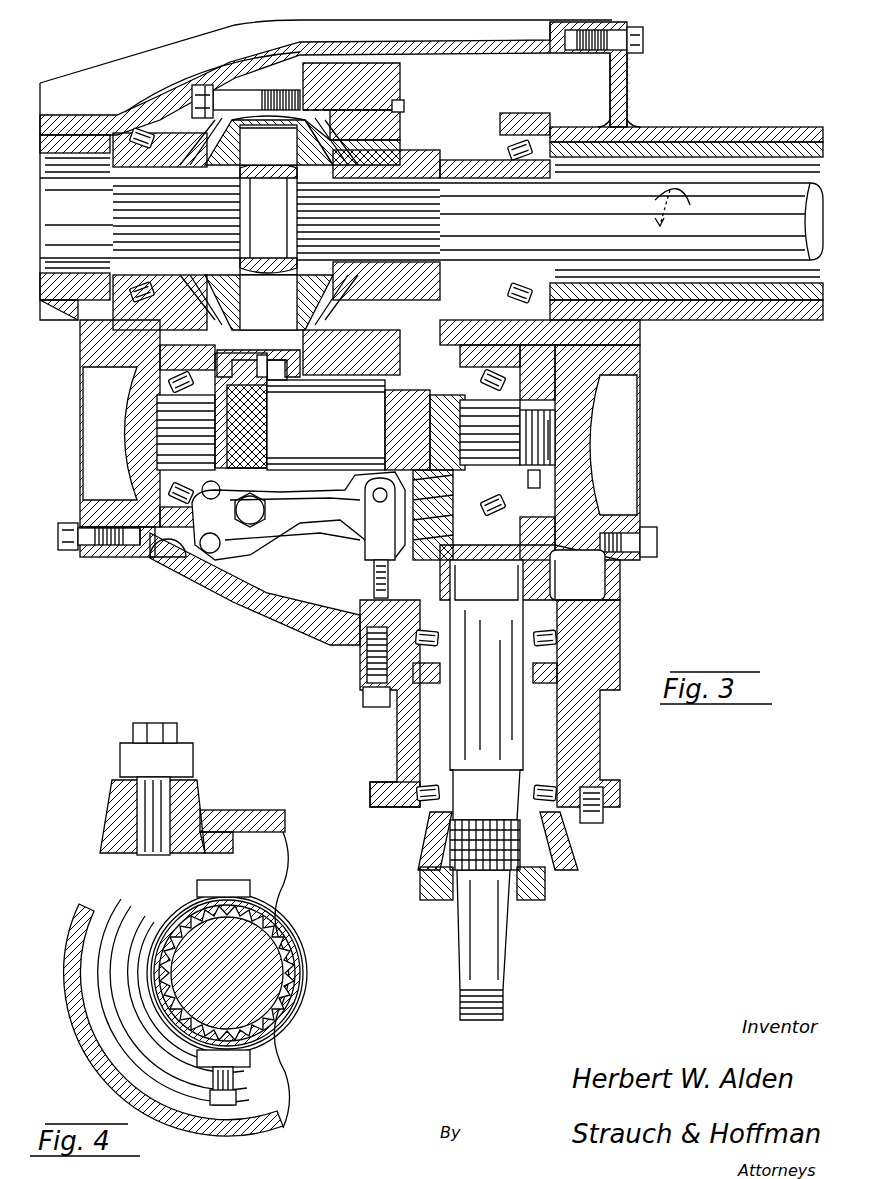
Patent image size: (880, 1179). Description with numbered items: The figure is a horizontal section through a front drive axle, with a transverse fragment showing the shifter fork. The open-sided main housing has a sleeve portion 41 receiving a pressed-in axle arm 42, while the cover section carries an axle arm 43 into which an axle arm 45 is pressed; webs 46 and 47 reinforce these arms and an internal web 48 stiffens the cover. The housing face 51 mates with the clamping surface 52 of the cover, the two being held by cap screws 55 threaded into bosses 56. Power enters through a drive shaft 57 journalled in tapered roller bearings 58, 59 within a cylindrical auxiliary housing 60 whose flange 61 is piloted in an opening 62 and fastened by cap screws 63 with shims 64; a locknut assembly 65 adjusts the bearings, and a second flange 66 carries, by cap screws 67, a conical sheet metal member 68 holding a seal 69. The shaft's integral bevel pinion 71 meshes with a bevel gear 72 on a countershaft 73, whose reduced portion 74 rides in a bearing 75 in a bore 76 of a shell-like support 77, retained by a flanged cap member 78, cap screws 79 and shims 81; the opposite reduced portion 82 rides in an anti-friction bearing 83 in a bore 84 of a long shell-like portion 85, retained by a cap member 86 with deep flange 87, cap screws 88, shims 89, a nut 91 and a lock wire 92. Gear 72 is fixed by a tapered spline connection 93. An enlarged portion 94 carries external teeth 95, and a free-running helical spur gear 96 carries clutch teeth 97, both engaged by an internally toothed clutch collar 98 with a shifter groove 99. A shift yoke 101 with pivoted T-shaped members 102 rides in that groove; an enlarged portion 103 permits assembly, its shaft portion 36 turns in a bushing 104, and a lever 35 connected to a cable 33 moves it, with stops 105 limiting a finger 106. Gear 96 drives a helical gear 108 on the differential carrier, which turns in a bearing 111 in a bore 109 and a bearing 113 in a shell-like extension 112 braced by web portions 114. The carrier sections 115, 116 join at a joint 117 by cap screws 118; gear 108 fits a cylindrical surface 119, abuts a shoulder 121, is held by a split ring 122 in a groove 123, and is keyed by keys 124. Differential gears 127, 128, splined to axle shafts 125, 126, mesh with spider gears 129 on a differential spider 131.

In FIG. 3, the cable 33 is at (372, 589).
In FIG. 3, the lever 35 is at (355, 482).
In FIG. 4, the lever 35 is at (125, 750).
In FIG. 3, the shaft portion 36 is at (266, 512).
In FIG. 4, the shaft portion 36 is at (140, 797).
In FIG. 3, the sleeve portion 41 is at (60, 320).
In FIG. 3, the axle arm 42 is at (88, 265).
In FIG. 3, the axle arm 43 is at (775, 127).
In FIG. 3, the axle arm 45 is at (780, 322).
In FIG. 3, the strengthening web 46 is at (93, 80).
In FIG. 3, the strengthening web 47 is at (640, 108).
In FIG. 3, the internal web 48 is at (600, 62).
In FIG. 3, the face 51 is at (607, 62).
In FIG. 3, the clamping surface 52 is at (628, 60).
In FIG. 3, the cap screw 55 is at (645, 40).
In FIG. 3, the boss 56 is at (565, 29).
In FIG. 3, the drive shaft 57 is at (502, 712).
In FIG. 3, the tapered roller bearing 58 is at (530, 799).
In FIG. 3, the tapered roller bearing 59 is at (530, 650).
In FIG. 3, the pinion bearing housing 60 is at (570, 740).
In FIG. 3, the flange 61 is at (580, 600).
In FIG. 3, the opening 62 is at (605, 662).
In FIG. 3, the cap screw 63 is at (360, 700).
In FIG. 3, the shim 64 is at (365, 668).
In FIG. 3, the locknut assembly 65 is at (440, 845).
In FIG. 3, the second flange 66 is at (370, 795).
In FIG. 3, the cap screw 67 is at (595, 823).
In FIG. 3, the conical sheet metal member 68 is at (555, 858).
In FIG. 3, the seal 69 is at (437, 904).
In FIG. 3, the bevel pinion 71 is at (486, 603).
In FIG. 3, the bevel gear 72 is at (420, 488).
In FIG. 3, the countershaft 73 is at (418, 449).
In FIG. 4, the countershaft 73 is at (290, 1000).
In FIG. 3, the reduced portion 74 is at (190, 449).
In FIG. 3, the bearing 75 is at (190, 427).
In FIG. 3, the bore 76 is at (167, 343).
In FIG. 3, the shell-like support 77 is at (183, 370).
In FIG. 3, the flanged cap member 78 is at (112, 439).
In FIG. 3, the cap screw 79 is at (65, 548).
In FIG. 3, the shim 81 is at (90, 555).
In FIG. 3, the reduced portion 82 is at (502, 457).
In FIG. 3, the anti-friction bearing 83 is at (500, 424).
In FIG. 3, the bore 84 is at (495, 367).
In FIG. 3, the shell-like portion 85 is at (480, 367).
In FIG. 3, the cap member 86 is at (595, 438).
In FIG. 3, the deep flange 87 is at (553, 425).
In FIG. 3, the cap screw 88 is at (660, 544).
In FIG. 3, the shim 89 is at (640, 345).
In FIG. 3, the nut 91 is at (552, 412).
In FIG. 3, the lock wire 92 is at (540, 477).
In FIG. 3, the tapered spline connection 93 is at (422, 442).
In FIG. 3, the enlarged portion 94 is at (270, 432).
In FIG. 3, the external teeth 95 is at (265, 382).
In FIG. 3, the helical spur gear 96 is at (392, 412).
In FIG. 3, the clutch teeth 97 is at (352, 411).
In FIG. 3, the clutch collar 98 is at (268, 364).
In FIG. 4, the clutch collar 98 is at (278, 1022).
In FIG. 3, the shifter groove 99 is at (245, 355).
In FIG. 4, the shifter groove 99 is at (306, 960).
In FIG. 4, the shift yoke 101 is at (160, 1068).
In FIG. 4, the T-shaped member 102 is at (250, 890).
In FIG. 4, the enlarged portion 103 is at (232, 853).
In FIG. 4, the bushing 104 is at (140, 832).
In FIG. 3, the stop 105 is at (214, 552).
In FIG. 3, the finger 106 is at (185, 567).
In FIG. 3, the helical gear 108 is at (400, 90).
In FIG. 3, the bore 109 is at (150, 104).
In FIG. 3, the bearing 111 is at (160, 137).
In FIG. 3, the shell-like extension 112 is at (552, 120).
In FIG. 3, the bearing 113 is at (506, 135).
In FIG. 3, the web portion 114 is at (540, 341).
In FIG. 3, the carrier section 115 is at (222, 80).
In FIG. 3, the carrier section 116 is at (455, 162).
In FIG. 3, the joint 117 is at (282, 88).
In FIG. 3, the cap screw 118 is at (193, 99).
In FIG. 3, the cylindrical surface 119 is at (404, 110).
In FIG. 3, the shoulder 121 is at (310, 108).
In FIG. 3, the split ring 122 is at (400, 102).
In FIG. 3, the groove 123 is at (408, 118).
In FIG. 3, the key 124 is at (303, 134).
In FIG. 3, the axle shaft 125 is at (88, 221).
In FIG. 3, the axle shaft 126 is at (615, 222).
In FIG. 3, the differential gear 127 is at (238, 142).
In FIG. 3, the differential gear 128 is at (300, 150).
In FIG. 3, the differential spider gear 129 is at (269, 302).
In FIG. 3, the differential spider 131 is at (285, 296).